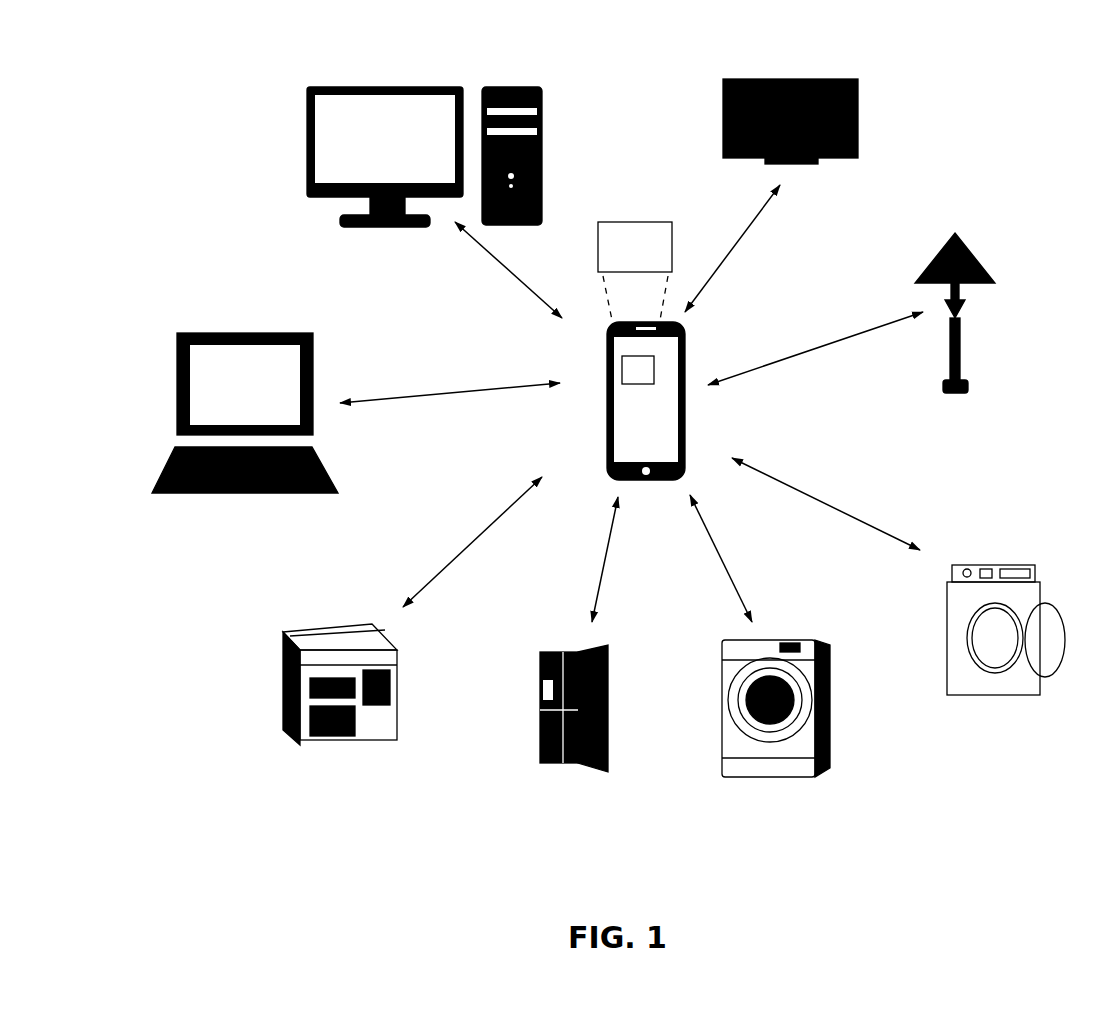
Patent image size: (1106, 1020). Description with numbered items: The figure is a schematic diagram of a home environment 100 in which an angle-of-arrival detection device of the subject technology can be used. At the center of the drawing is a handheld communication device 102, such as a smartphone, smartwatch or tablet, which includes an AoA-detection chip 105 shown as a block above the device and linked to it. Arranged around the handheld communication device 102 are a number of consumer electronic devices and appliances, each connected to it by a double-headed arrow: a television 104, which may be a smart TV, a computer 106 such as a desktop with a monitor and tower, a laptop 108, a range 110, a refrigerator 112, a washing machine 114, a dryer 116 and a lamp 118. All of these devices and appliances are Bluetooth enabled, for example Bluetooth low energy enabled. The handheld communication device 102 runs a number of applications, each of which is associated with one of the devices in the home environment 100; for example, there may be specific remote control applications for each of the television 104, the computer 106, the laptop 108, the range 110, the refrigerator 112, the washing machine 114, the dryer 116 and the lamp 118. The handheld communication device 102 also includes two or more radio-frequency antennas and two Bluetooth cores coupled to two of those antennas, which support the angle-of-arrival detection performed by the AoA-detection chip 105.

The home environment 100 is at (158, 93).
The handheld communication device 102 is at (657, 448).
The television 104 is at (840, 103).
The AoA-detection chip 105 is at (654, 258).
The computer 106 is at (457, 137).
The laptop 108 is at (280, 395).
The range 110 is at (304, 704).
The refrigerator 112 is at (538, 727).
The washing machine 114 is at (802, 731).
The dryer 116 is at (1024, 652).
The lamp 118 is at (998, 310).